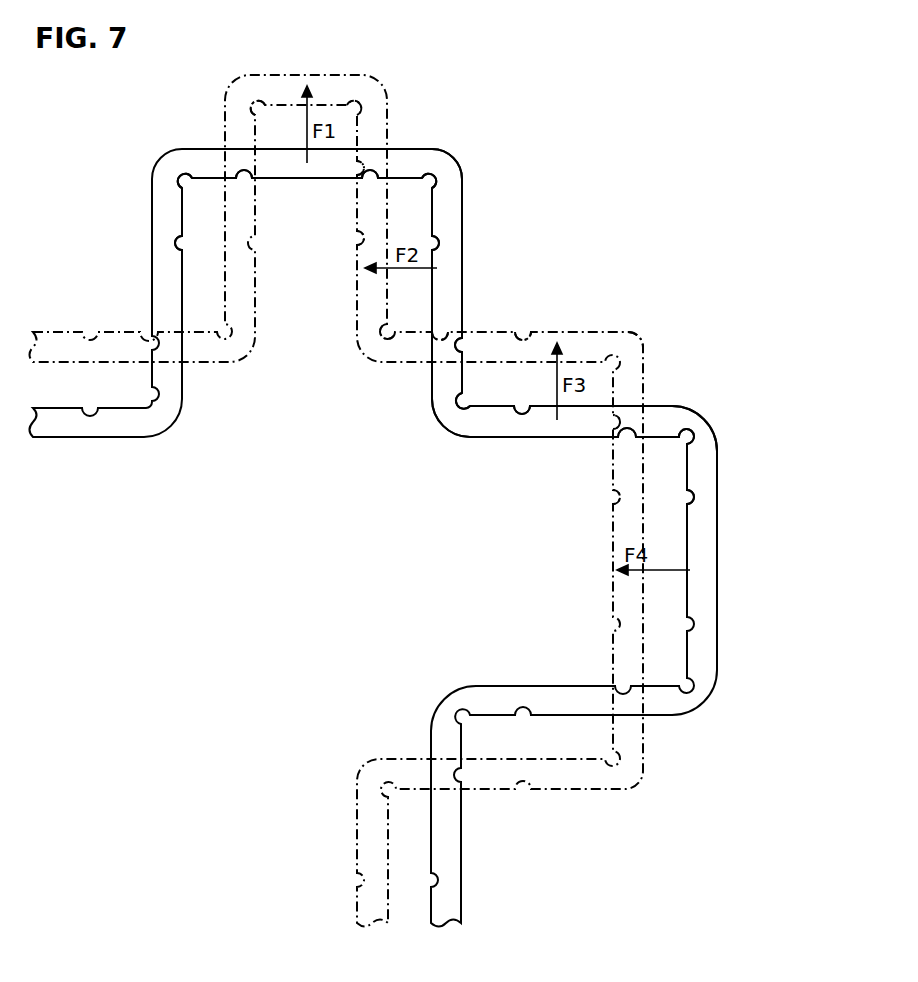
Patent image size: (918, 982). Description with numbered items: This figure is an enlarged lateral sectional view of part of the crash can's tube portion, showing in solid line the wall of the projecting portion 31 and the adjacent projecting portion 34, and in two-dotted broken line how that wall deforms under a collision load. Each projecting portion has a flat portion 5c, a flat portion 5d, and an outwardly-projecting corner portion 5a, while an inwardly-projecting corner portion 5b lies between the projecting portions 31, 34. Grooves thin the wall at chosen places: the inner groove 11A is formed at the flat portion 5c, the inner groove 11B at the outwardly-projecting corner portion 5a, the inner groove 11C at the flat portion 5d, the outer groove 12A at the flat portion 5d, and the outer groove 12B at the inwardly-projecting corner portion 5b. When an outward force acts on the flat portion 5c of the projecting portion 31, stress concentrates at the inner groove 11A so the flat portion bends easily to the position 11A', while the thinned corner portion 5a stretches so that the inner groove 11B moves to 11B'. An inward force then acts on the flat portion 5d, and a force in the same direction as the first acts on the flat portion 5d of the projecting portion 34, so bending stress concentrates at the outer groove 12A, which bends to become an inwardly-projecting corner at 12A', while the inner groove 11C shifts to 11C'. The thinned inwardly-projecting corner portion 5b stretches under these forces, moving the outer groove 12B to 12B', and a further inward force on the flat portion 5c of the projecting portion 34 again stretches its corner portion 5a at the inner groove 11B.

The upper projecting portion 31 is at (158, 167).
The projecting portion 34 is at (705, 697).
The outwardly-projecting corner portion 5a is at (447, 160).
The inwardly-projecting corner portion 5b is at (448, 425).
The flat portion 5c is at (275, 149).
The flat portion 5d is at (463, 266).
The inner groove 11A is at (517, 314).
The inner groove 11B is at (488, 301).
The inner groove 11C is at (467, 330).
The outer groove 12A is at (436, 409).
The outer groove 12B is at (406, 414).
The deformed inner groove 11A' is at (435, 277).
The deformed inner groove 11B' is at (452, 318).
The deformed inner groove 11C' is at (502, 289).
The deformed outer groove 12A' is at (454, 323).
The deformed outer groove 12B' is at (480, 320).